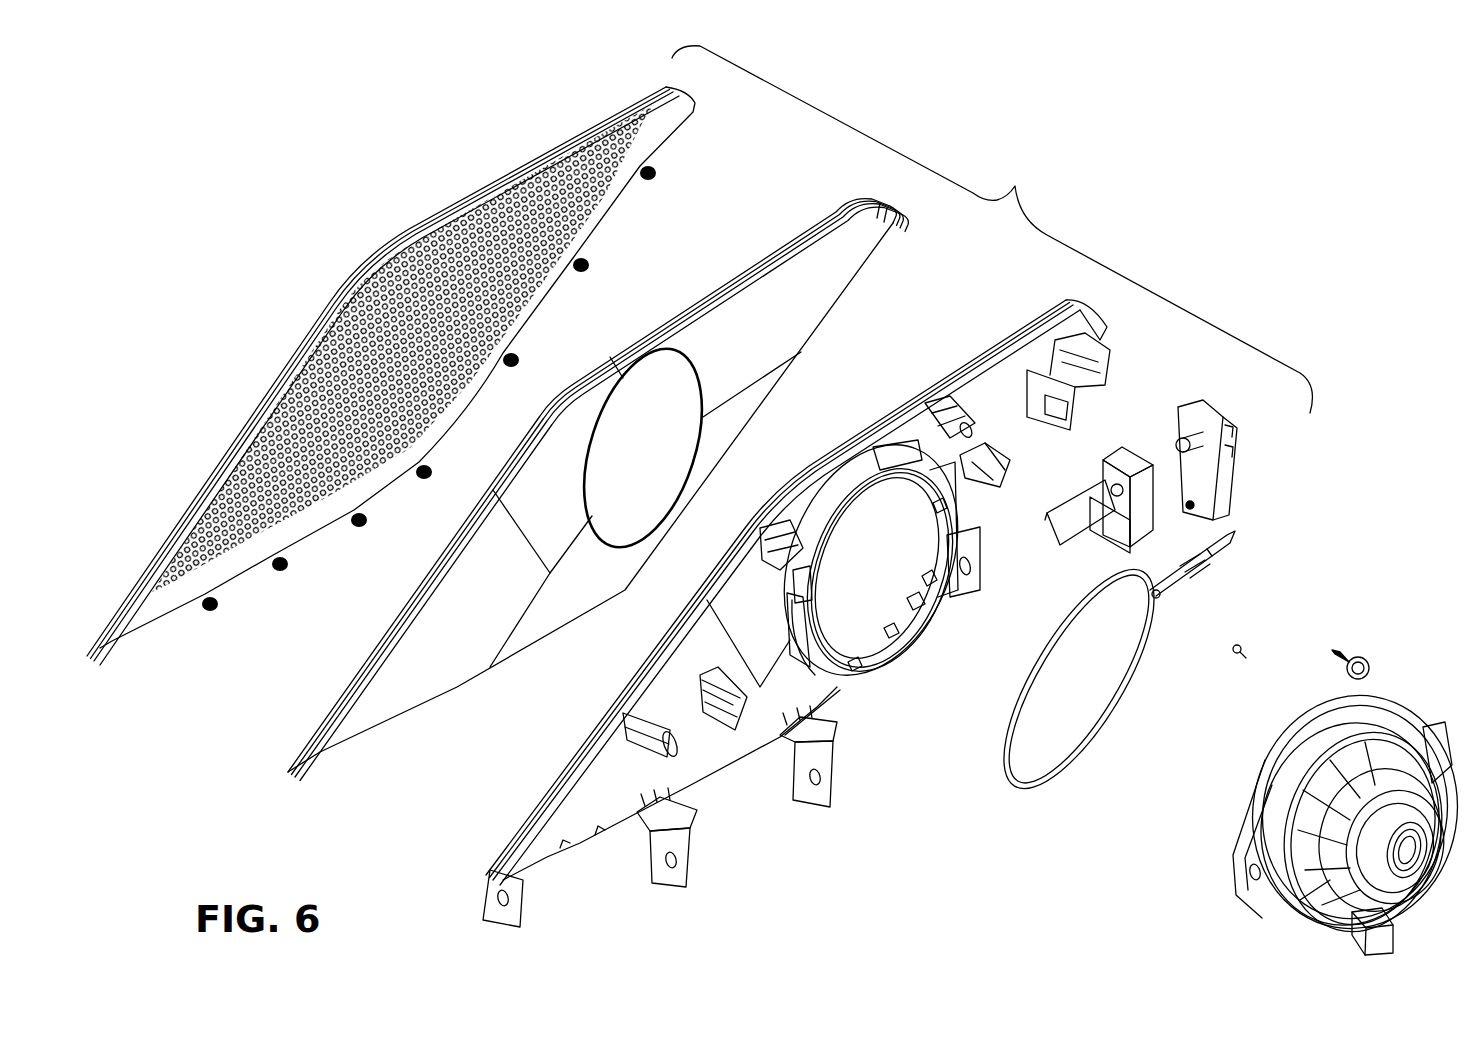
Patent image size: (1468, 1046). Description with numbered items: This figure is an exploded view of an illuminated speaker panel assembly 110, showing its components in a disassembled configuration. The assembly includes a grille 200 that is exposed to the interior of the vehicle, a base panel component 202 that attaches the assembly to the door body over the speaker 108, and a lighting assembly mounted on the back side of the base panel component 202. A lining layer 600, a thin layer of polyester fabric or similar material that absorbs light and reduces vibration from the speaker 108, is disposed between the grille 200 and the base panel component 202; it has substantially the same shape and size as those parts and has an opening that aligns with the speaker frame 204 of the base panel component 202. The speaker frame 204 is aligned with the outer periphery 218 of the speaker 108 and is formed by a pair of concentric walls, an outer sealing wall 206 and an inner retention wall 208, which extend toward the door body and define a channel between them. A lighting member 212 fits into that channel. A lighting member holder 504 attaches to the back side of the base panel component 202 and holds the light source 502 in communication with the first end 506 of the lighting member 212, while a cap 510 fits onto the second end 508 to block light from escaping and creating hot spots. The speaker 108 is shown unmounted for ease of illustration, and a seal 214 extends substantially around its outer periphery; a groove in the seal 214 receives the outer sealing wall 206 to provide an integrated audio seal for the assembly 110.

The illuminated speaker panel assembly 110 is at (1015, 188).
The grille 200 is at (464, 204).
The lining layer 600 is at (396, 719).
The base panel component 202 is at (1000, 350).
The speaker frame 204 is at (840, 483).
The outer sealing wall 206 is at (883, 667).
The inner retention wall 208 is at (905, 605).
The lighting member holder 504 is at (1130, 462).
The light source 502 is at (1218, 499).
The first end 506 is at (1231, 540).
The second end 508 is at (1160, 597).
The lighting member 212 is at (1055, 772).
The cap 510 is at (1235, 656).
The seal 214 is at (1386, 713).
The outer periphery 218 is at (1283, 761).
The speaker 108 is at (1418, 863).